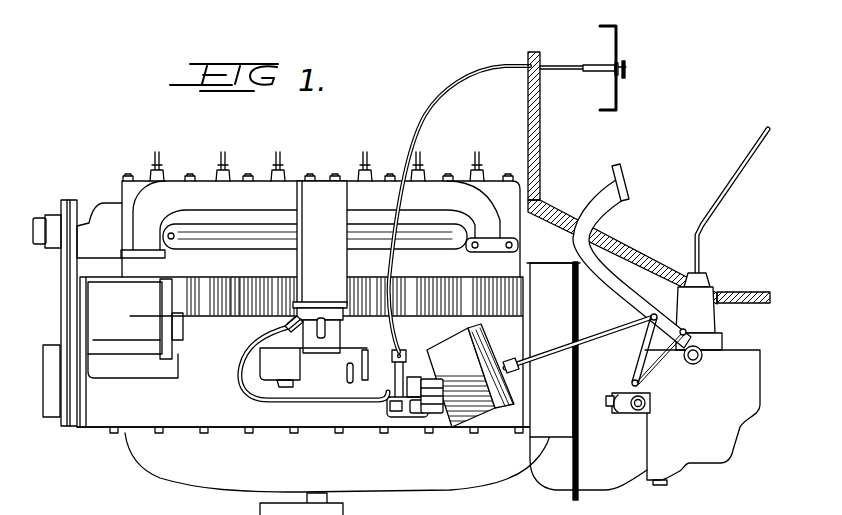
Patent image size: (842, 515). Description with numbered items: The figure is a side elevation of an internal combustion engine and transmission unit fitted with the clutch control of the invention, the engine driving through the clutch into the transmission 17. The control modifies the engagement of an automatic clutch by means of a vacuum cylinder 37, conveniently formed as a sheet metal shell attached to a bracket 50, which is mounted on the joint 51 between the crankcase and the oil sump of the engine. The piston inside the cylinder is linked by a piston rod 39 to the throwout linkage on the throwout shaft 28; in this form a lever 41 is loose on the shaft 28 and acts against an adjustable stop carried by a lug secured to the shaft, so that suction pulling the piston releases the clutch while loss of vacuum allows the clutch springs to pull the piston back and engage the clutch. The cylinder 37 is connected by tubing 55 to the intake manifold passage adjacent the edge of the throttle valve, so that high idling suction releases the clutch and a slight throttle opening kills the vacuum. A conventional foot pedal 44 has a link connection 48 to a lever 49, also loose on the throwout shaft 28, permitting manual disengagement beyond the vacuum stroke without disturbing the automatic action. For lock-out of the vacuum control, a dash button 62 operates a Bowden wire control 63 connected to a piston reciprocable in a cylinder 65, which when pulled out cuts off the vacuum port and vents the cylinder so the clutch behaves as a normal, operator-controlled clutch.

The transmission 17 is at (707, 420).
The throwout shaft 28 is at (637, 417).
The vacuum cylinder 37 is at (451, 343).
The piston rod 39 is at (560, 352).
The lever 41 is at (645, 348).
The foot pedal 44 is at (610, 252).
The link connection 48 is at (668, 353).
The lever 49 is at (652, 394).
The bracket 50 is at (387, 414).
The joint 51 is at (363, 430).
The tubing 55 is at (243, 372).
The dash button 62 is at (628, 68).
The Bowden wire control 63 is at (413, 138).
The cylinder 65 is at (431, 414).